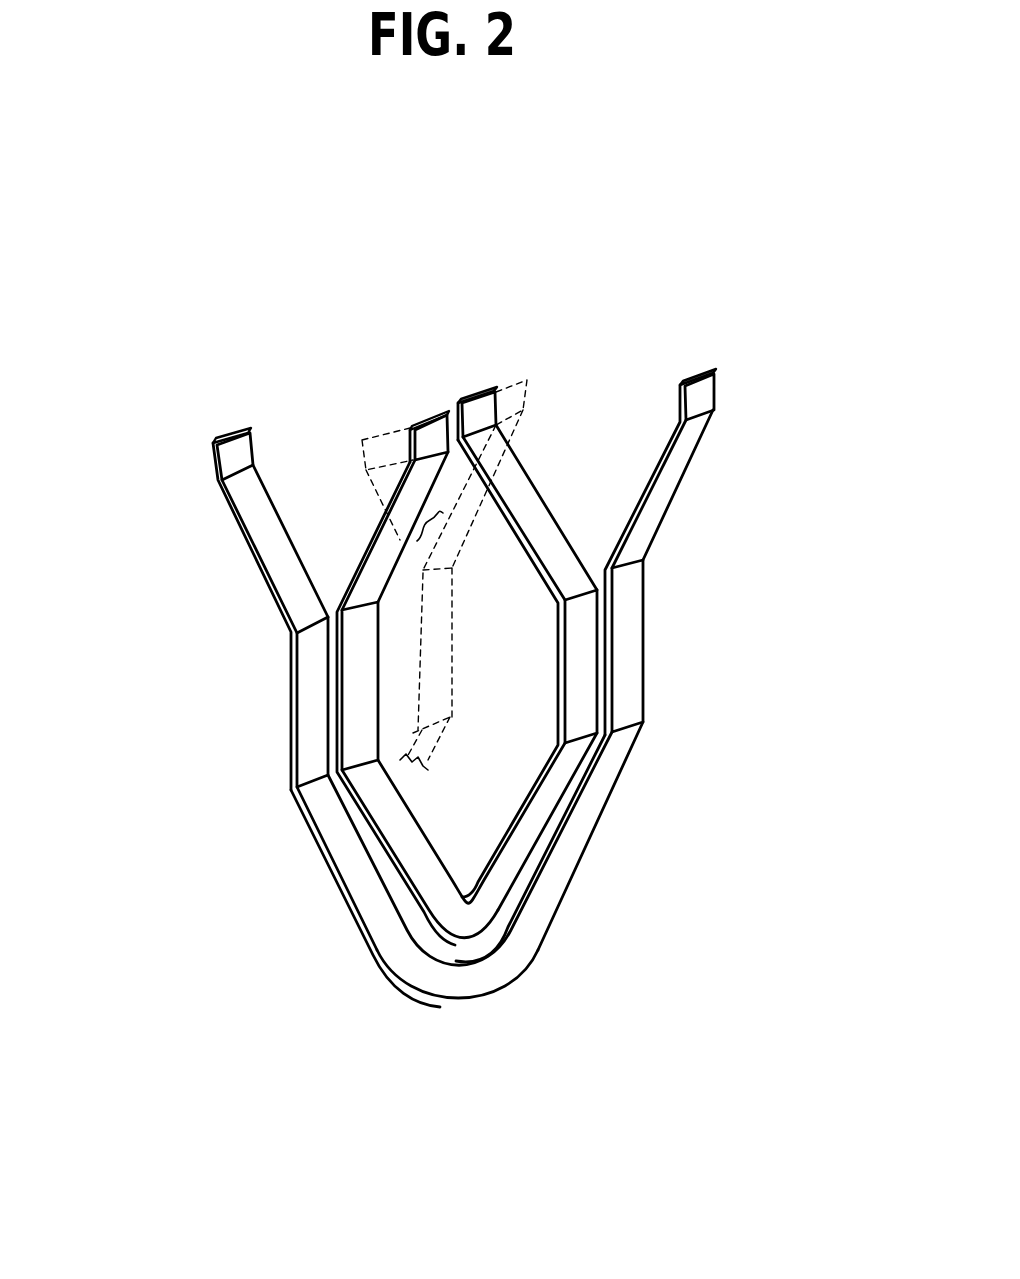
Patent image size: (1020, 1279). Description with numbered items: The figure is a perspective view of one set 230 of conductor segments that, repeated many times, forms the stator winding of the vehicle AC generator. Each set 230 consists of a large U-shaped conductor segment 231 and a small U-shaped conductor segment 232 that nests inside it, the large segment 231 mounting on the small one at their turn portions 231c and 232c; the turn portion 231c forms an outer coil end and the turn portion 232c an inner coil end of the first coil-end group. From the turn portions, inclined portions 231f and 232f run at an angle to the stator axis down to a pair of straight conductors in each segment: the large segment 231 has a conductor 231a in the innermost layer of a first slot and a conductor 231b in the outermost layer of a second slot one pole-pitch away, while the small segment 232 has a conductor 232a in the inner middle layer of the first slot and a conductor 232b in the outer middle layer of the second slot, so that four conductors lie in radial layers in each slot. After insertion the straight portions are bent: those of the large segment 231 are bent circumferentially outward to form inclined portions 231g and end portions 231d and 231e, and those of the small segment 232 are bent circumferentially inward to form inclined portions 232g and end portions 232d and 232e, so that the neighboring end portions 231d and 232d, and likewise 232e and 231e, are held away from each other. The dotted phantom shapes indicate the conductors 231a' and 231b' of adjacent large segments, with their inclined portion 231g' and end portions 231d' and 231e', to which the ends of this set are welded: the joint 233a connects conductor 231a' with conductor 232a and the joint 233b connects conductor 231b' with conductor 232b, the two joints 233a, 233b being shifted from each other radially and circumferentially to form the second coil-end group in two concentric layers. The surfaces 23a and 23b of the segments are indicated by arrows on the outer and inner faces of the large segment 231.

The set of conductor segments 230 is at (368, 976).
The large conductor segment 231 is at (693, 501).
The small conductor segment 232 is at (583, 509).
The conductor 231a is at (223, 701).
The conductor 231b is at (732, 646).
The turn portion 231c is at (453, 987).
The end portion 231d is at (175, 533).
The end portion 231e is at (752, 435).
The inclined portion 231f is at (338, 853).
The inclined portion 231g is at (468, 478).
The conductor 231a' is at (267, 451).
The conductor 231b' is at (605, 669).
The left arm tip before bending 231d' is at (324, 400).
The right arm tip before bending 231e' is at (520, 439).
The inclined portion 231g' is at (615, 525).
The conductor 232a is at (365, 723).
The conductor 232b is at (580, 718).
The turn portion 232c is at (467, 923).
The end portion 232d is at (432, 412).
The end portion 232e is at (506, 347).
The inclined portion 232f is at (533, 828).
The inclined portion 232g is at (372, 565).
The joint 233a is at (405, 384).
The joint 233b is at (482, 393).
The outer surface 23a is at (312, 915).
The inner surface 23b is at (226, 545).